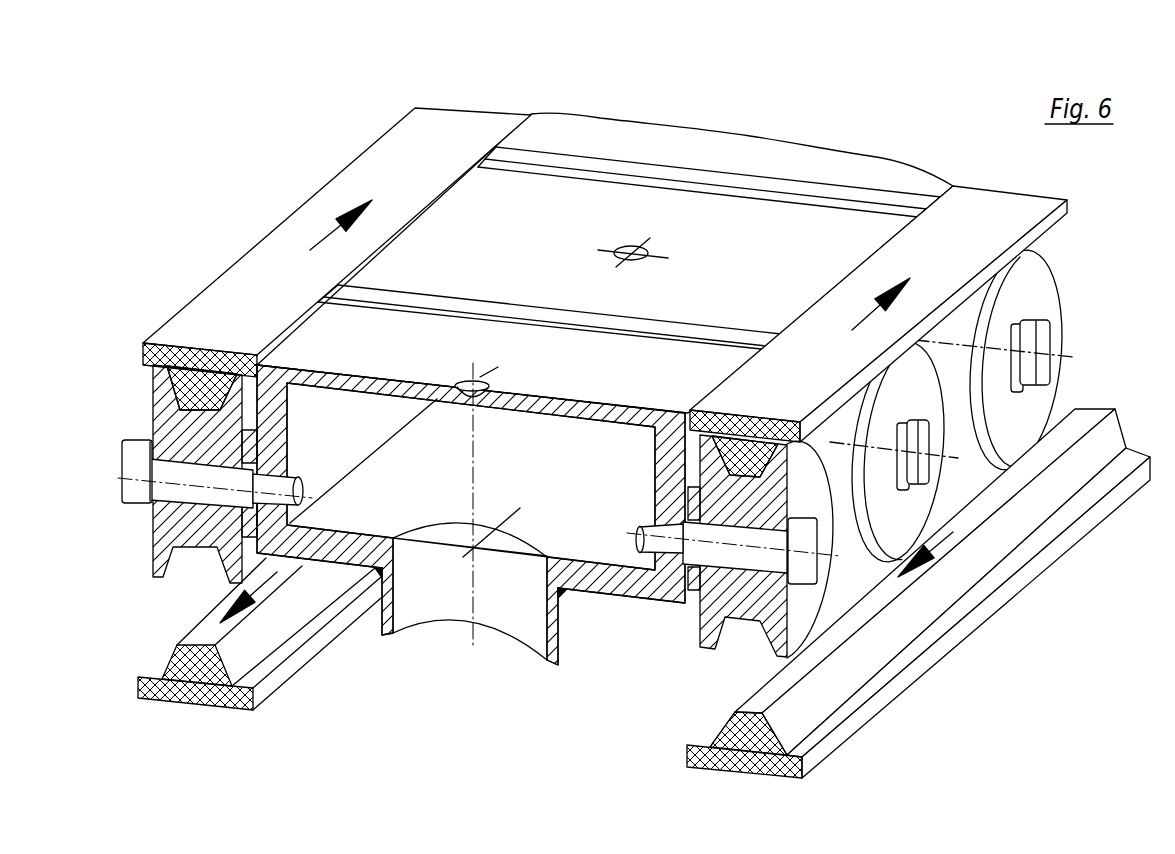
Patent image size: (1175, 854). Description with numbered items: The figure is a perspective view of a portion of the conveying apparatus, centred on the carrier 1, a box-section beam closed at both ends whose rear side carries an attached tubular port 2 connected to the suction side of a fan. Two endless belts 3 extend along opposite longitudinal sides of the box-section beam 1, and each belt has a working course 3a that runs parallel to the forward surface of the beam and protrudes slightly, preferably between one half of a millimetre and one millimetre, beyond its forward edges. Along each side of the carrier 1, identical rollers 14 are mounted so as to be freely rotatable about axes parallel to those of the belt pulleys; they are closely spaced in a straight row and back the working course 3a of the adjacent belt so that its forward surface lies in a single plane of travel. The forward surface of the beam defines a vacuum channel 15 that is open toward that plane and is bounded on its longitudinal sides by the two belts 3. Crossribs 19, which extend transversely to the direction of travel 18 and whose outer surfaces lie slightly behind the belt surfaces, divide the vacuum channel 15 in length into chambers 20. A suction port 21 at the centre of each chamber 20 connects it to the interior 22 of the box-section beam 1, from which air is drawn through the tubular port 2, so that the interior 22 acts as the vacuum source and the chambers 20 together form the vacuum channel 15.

The carrier 1 is at (471, 553).
The tubular port 2 is at (423, 603).
The endless belt 3 is at (1055, 548).
The working course 3a is at (948, 228).
The roller 14 is at (993, 365).
The vacuum channel 15 is at (458, 225).
The direction of travel 18 is at (862, 322).
The crossrib 19 is at (561, 158).
The chamber 20 is at (755, 305).
The suction port 21 is at (634, 253).
The interior 22 is at (471, 476).